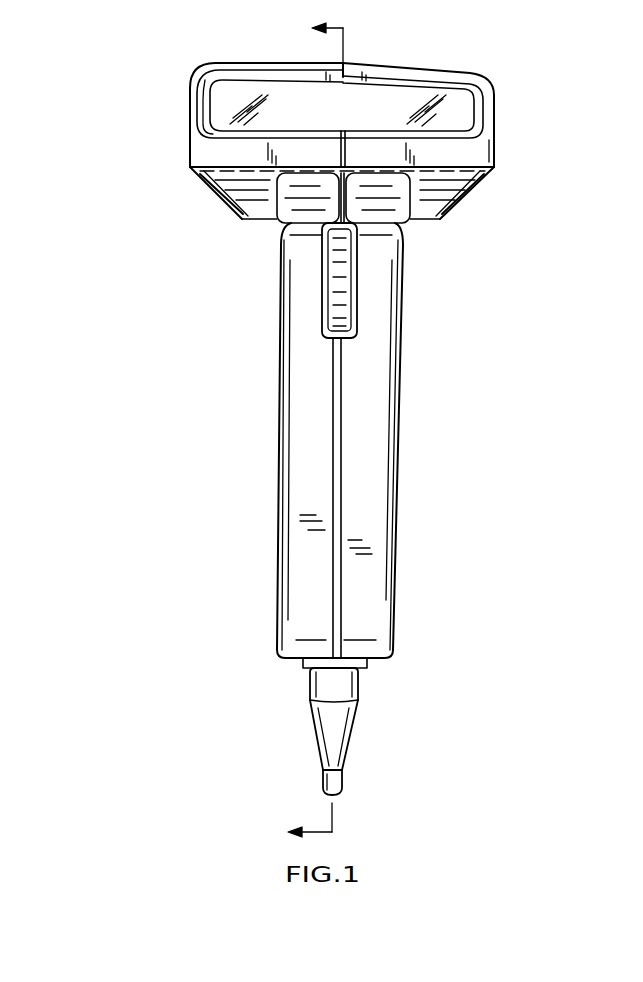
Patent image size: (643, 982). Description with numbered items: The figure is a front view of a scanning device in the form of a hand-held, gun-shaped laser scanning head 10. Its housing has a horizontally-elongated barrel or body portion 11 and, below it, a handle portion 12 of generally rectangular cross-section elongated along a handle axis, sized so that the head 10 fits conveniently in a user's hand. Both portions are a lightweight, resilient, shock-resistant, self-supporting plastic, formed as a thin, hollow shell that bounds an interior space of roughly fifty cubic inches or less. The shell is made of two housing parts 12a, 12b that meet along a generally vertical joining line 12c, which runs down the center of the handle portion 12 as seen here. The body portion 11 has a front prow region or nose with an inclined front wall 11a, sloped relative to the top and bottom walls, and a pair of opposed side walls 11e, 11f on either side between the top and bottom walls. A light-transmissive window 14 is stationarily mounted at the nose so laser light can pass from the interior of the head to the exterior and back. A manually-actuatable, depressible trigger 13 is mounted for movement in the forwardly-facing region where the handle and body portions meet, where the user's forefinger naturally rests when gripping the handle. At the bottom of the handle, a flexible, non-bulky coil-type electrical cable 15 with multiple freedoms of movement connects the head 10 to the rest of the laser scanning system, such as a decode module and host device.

The hand-held reading head 10 is at (410, 62).
The body portion 11 is at (516, 187).
The inclined front wall 11a is at (453, 207).
The side wall 11e is at (495, 153).
The side wall 11f is at (189, 149).
The window 14 is at (470, 108).
The trigger 13 is at (347, 292).
The handle portion 12 is at (400, 481).
The housing part 12a is at (375, 530).
The housing part 12b is at (293, 538).
The joining line 12c is at (333, 618).
The coil-type electrical cable 15 is at (347, 735).